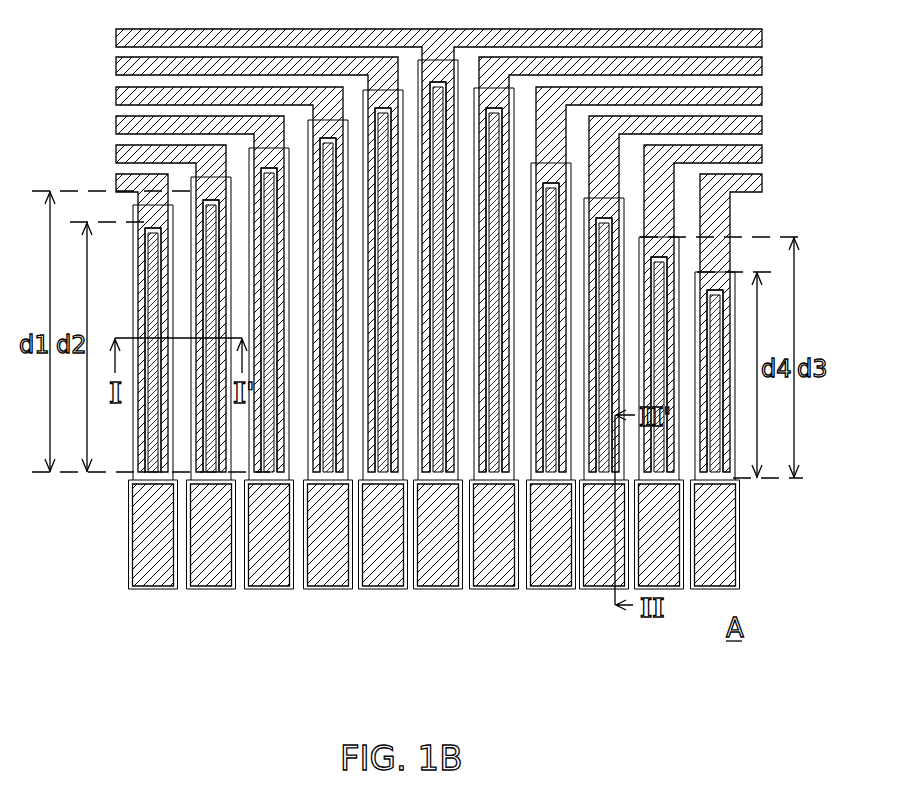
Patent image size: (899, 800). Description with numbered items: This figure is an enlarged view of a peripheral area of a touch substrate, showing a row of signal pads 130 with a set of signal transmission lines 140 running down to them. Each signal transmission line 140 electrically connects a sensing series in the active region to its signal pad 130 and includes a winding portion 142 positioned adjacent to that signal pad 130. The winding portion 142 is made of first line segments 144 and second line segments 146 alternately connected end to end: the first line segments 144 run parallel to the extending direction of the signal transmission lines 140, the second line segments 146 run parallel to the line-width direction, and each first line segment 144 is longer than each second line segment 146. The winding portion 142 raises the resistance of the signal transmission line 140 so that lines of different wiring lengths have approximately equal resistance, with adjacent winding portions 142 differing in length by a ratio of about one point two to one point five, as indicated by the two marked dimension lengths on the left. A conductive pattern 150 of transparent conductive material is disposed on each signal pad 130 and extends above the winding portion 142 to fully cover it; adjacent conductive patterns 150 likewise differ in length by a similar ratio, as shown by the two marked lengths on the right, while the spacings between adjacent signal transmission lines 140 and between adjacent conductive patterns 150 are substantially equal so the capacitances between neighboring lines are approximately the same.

The signal pad 130 is at (202, 592).
The signal transmission line 140 is at (116, 182).
The winding portion 142 is at (345, 643).
The first line segment 144 is at (283, 472).
The second line segment 146 is at (262, 473).
The conductive pattern 150 is at (220, 592).